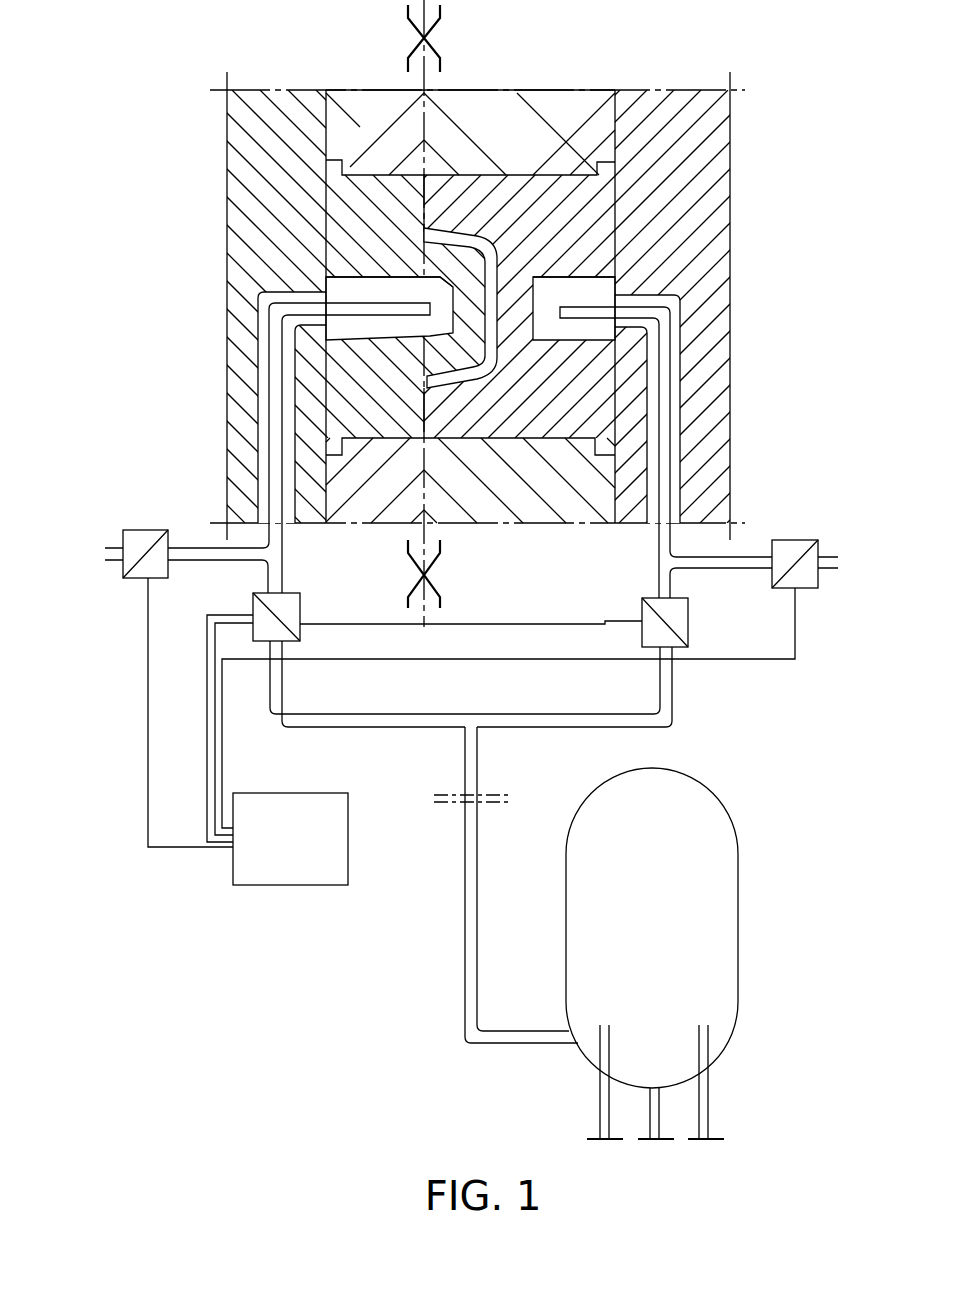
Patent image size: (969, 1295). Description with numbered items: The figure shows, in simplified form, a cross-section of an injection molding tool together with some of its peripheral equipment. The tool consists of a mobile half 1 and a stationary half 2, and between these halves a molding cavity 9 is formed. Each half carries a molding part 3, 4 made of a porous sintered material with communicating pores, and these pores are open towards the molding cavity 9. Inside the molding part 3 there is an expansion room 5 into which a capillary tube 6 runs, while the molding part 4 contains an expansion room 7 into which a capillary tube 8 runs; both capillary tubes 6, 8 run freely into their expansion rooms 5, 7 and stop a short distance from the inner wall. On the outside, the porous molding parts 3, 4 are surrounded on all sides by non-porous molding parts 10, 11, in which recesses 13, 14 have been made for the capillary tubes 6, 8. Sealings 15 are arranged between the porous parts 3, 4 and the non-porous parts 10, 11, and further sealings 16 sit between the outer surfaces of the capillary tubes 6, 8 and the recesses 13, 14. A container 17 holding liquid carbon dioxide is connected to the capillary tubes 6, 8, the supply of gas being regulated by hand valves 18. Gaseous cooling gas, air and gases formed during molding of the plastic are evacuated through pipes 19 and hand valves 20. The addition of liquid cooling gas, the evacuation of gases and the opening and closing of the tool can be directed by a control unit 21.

The mobile half 1 is at (461, 106).
The stationary half 2 is at (385, 118).
The molding part 3 is at (497, 193).
The molding part 4 is at (366, 188).
The expansion room 5 is at (545, 277).
The capillary tube 6 is at (560, 307).
The expansion room 7 is at (420, 278).
The capillary tube 8 is at (400, 305).
The molding cavity 9 is at (493, 238).
The non-porous molding part 10 is at (652, 110).
The non-porous molding part 11 is at (253, 107).
The recess 13 is at (673, 408).
The recess 14 is at (263, 432).
The sealing 15 is at (327, 220).
The sealing 16 is at (300, 314).
The container 17 is at (738, 871).
The hand valve 18 is at (272, 622).
The pipe 19 is at (212, 548).
The hand valve 20 is at (145, 573).
The control unit 21 is at (247, 872).